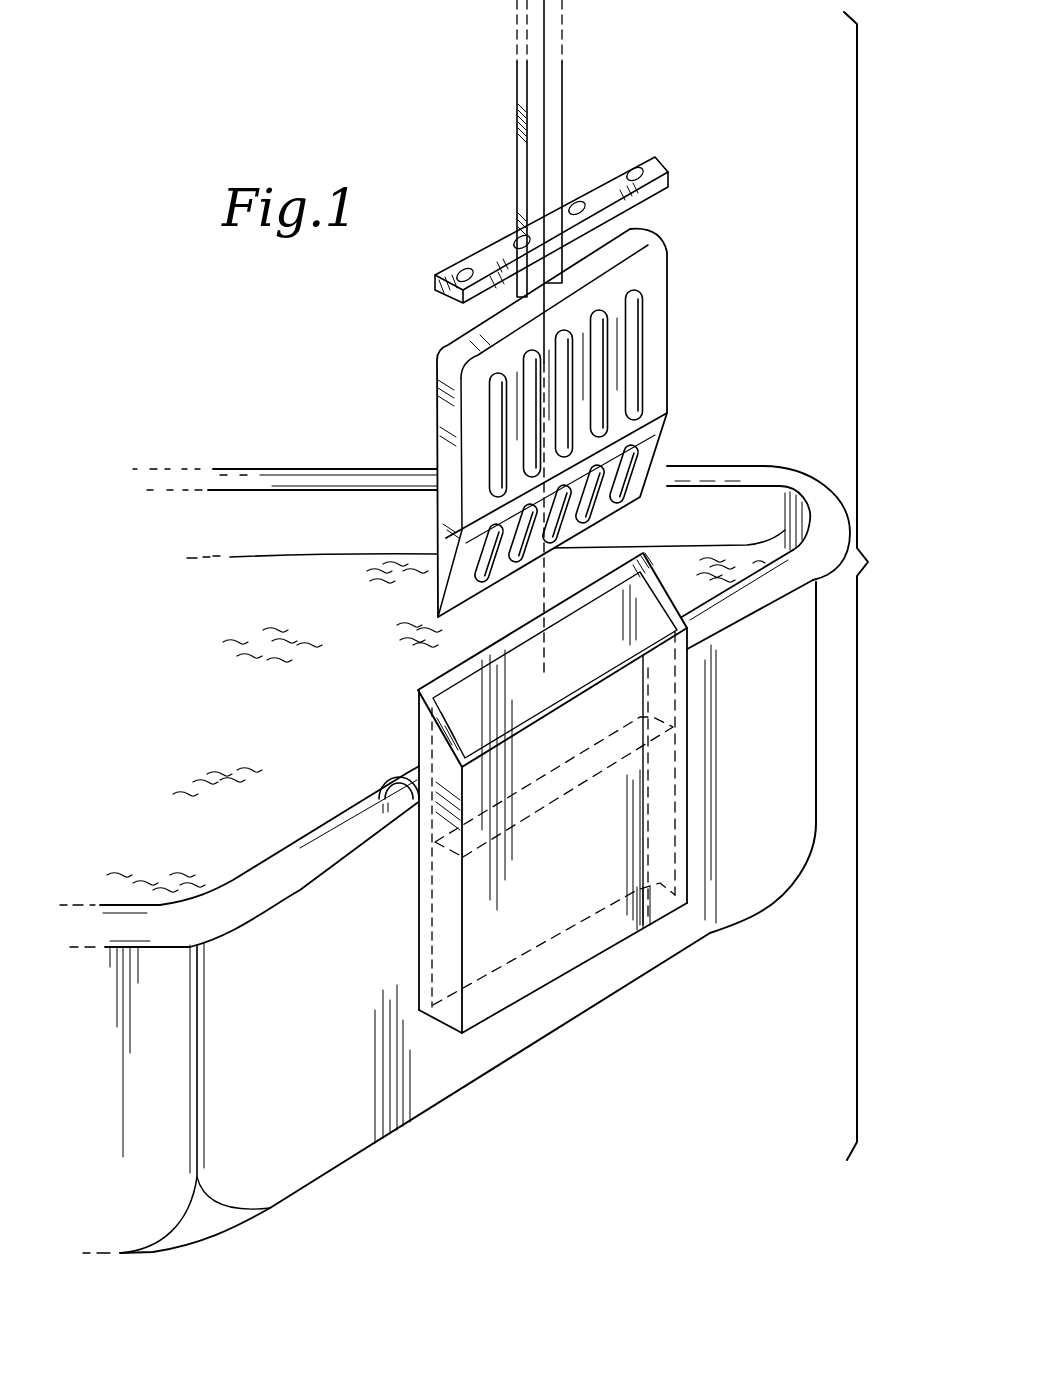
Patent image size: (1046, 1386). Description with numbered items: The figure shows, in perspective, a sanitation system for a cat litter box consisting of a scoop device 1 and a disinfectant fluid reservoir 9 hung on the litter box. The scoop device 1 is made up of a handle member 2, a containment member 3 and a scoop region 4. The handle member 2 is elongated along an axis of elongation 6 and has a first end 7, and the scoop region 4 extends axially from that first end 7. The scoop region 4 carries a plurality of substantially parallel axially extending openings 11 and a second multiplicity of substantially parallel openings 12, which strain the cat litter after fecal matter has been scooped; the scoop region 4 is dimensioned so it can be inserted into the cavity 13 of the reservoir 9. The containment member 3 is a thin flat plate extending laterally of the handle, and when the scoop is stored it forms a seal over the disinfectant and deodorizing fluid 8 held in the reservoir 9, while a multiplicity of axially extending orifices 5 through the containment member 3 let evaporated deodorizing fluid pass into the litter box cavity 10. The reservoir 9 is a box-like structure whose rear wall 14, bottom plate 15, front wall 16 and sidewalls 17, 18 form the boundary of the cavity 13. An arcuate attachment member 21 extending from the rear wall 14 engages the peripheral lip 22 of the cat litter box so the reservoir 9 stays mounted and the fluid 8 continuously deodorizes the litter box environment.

The scoop device 1 is at (545, 108).
The handle member 2 is at (533, 140).
The containment member 3 is at (660, 163).
The scoop region 4 is at (653, 315).
The axially extending orifices 5 is at (638, 168).
The axis of elongation 6 is at (546, 84).
The first end 7 is at (580, 262).
The disinfectant and deodorizing fluid 8 is at (617, 805).
The disinfectant fluid reservoir 9 is at (688, 742).
The litter box cavity 10 is at (305, 515).
The axially extending openings 11 is at (635, 363).
The second multiplicity of openings 12 is at (648, 465).
The cavity 13 is at (472, 702).
The rear wall 14 is at (483, 655).
The bottom plate 15 is at (535, 972).
The front wall 16 is at (658, 678).
The sidewall 17 is at (660, 583).
The sidewall 18 is at (437, 712).
The arcuate attachment member 21 is at (408, 775).
The peripheral lip 22 is at (757, 474).